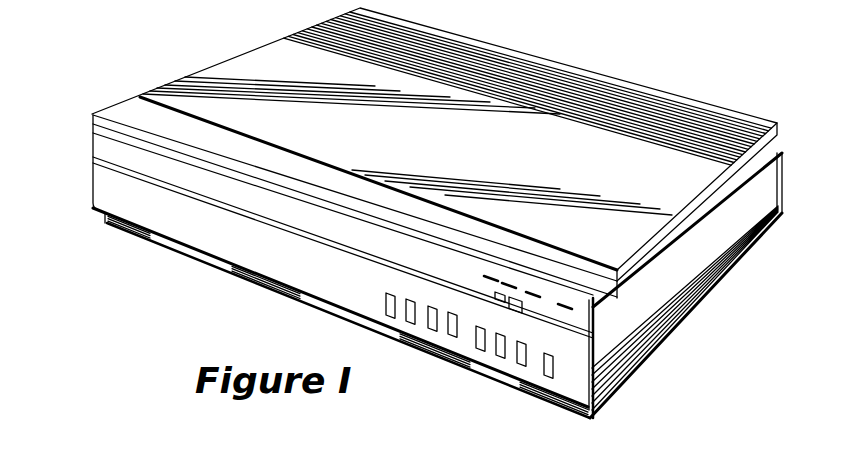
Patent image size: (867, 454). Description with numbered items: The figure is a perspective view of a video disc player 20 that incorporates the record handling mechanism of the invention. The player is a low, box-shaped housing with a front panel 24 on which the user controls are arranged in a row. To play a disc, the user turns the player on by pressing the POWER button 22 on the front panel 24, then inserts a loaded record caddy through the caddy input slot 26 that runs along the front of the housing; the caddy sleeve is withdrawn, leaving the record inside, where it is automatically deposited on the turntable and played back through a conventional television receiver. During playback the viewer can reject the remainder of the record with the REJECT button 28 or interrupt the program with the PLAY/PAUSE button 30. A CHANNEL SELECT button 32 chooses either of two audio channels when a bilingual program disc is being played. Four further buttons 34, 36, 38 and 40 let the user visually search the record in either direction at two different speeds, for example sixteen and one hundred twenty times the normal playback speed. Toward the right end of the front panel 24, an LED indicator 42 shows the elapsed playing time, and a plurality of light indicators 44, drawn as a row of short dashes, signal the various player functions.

The video disc player 20 is at (692, 405).
The POWER button 22 is at (549, 379).
The front panel 24 is at (198, 237).
The caddy input slot 26 is at (140, 172).
The REJECT button 28 is at (521, 367).
The PLAY/PAUSE button 30 is at (502, 358).
The CHANNEL SELECT button 32 is at (481, 352).
The visual search button 34 is at (451, 335).
The visual search button 36 is at (433, 331).
The visual search button 38 is at (407, 324).
The visual search button 40 is at (386, 304).
The LED indicator 42 is at (510, 300).
The light indicators 44 is at (548, 300).